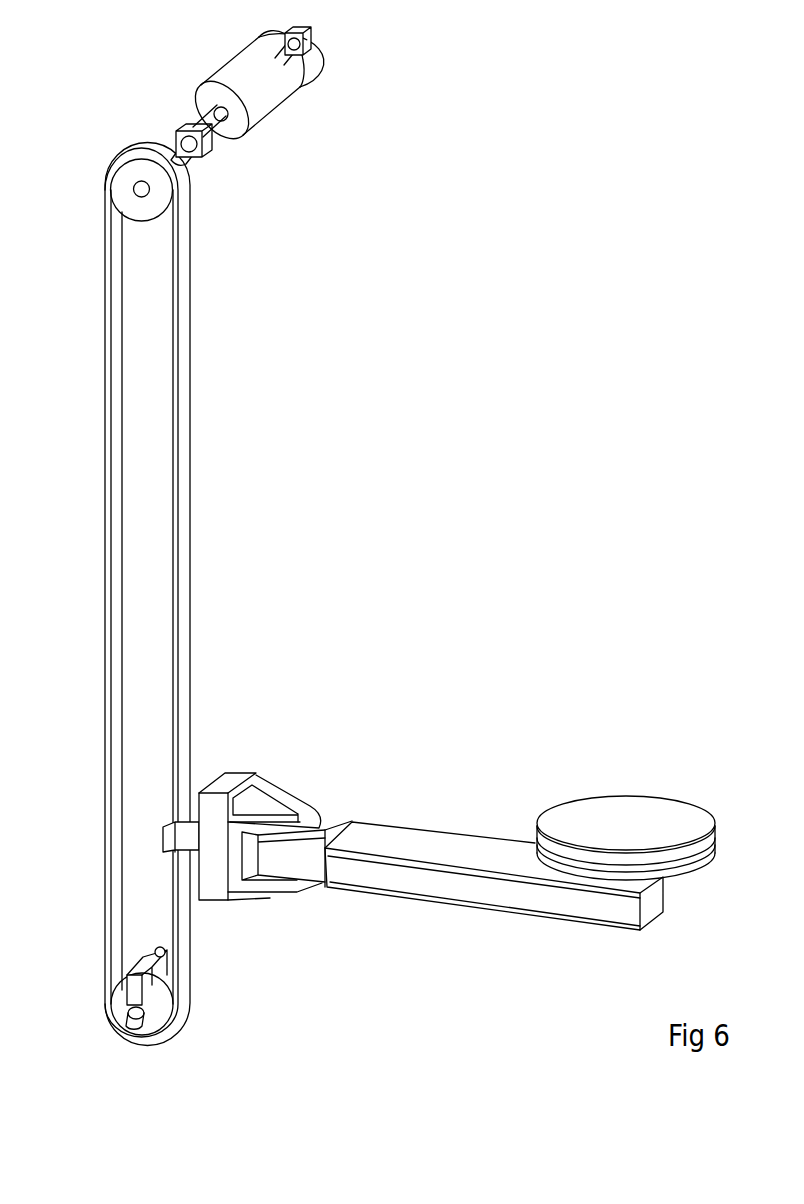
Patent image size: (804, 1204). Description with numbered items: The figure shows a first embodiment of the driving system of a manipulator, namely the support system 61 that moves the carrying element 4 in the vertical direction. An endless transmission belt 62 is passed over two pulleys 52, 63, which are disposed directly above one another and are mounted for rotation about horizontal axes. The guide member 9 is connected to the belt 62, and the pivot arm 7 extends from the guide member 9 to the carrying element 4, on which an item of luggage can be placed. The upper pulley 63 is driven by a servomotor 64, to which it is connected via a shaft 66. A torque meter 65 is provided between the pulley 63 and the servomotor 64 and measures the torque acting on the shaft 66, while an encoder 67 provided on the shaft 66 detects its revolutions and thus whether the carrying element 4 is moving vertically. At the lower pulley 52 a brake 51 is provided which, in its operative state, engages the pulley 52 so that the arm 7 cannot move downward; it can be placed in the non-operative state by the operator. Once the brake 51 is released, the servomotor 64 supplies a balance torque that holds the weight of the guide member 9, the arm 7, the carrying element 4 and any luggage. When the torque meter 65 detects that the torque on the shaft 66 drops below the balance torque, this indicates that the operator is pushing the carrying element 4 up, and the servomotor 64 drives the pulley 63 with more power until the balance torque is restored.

The carrying element 4 is at (634, 812).
The pivot arm 7 is at (427, 840).
The guide member 9 is at (233, 793).
The brake 51 is at (157, 953).
The pulley 52 is at (160, 1018).
The support system 61 is at (576, 318).
The transmission belt 62 is at (188, 318).
The pulley 63 is at (120, 188).
The servomotor 64 is at (270, 96).
The torque meter 65 is at (188, 130).
The shaft 66 is at (213, 128).
The encoder 67 is at (306, 42).